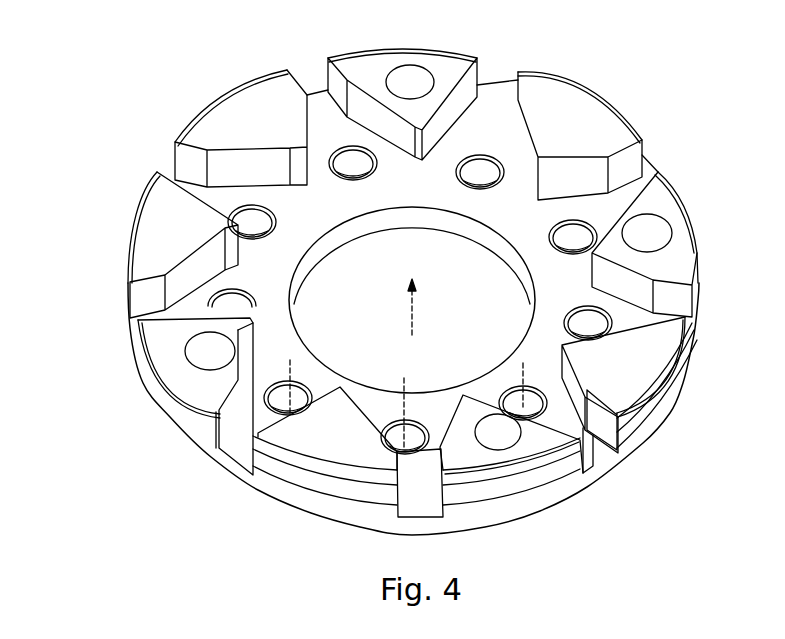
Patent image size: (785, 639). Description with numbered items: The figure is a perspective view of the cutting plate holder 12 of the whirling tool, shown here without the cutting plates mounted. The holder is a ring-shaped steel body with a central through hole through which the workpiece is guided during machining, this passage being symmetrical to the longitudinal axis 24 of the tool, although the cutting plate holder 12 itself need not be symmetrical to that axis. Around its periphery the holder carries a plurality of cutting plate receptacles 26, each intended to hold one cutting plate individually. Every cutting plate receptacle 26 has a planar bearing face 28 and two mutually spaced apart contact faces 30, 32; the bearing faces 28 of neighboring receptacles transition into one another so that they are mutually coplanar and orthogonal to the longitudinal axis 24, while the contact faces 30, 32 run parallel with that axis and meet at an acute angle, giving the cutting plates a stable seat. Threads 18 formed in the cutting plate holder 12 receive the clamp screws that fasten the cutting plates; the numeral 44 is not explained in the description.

The cutting plate holder 12 is at (112, 92).
The threads 18 is at (347, 160).
The longitudinal axis 24 is at (414, 305).
The cutting plate receptacles 26 is at (347, 214).
The planar bearing face 28 is at (398, 162).
The contact face 30 is at (326, 144).
The contact face 32 is at (370, 133).
The hole axes 44 is at (292, 368).